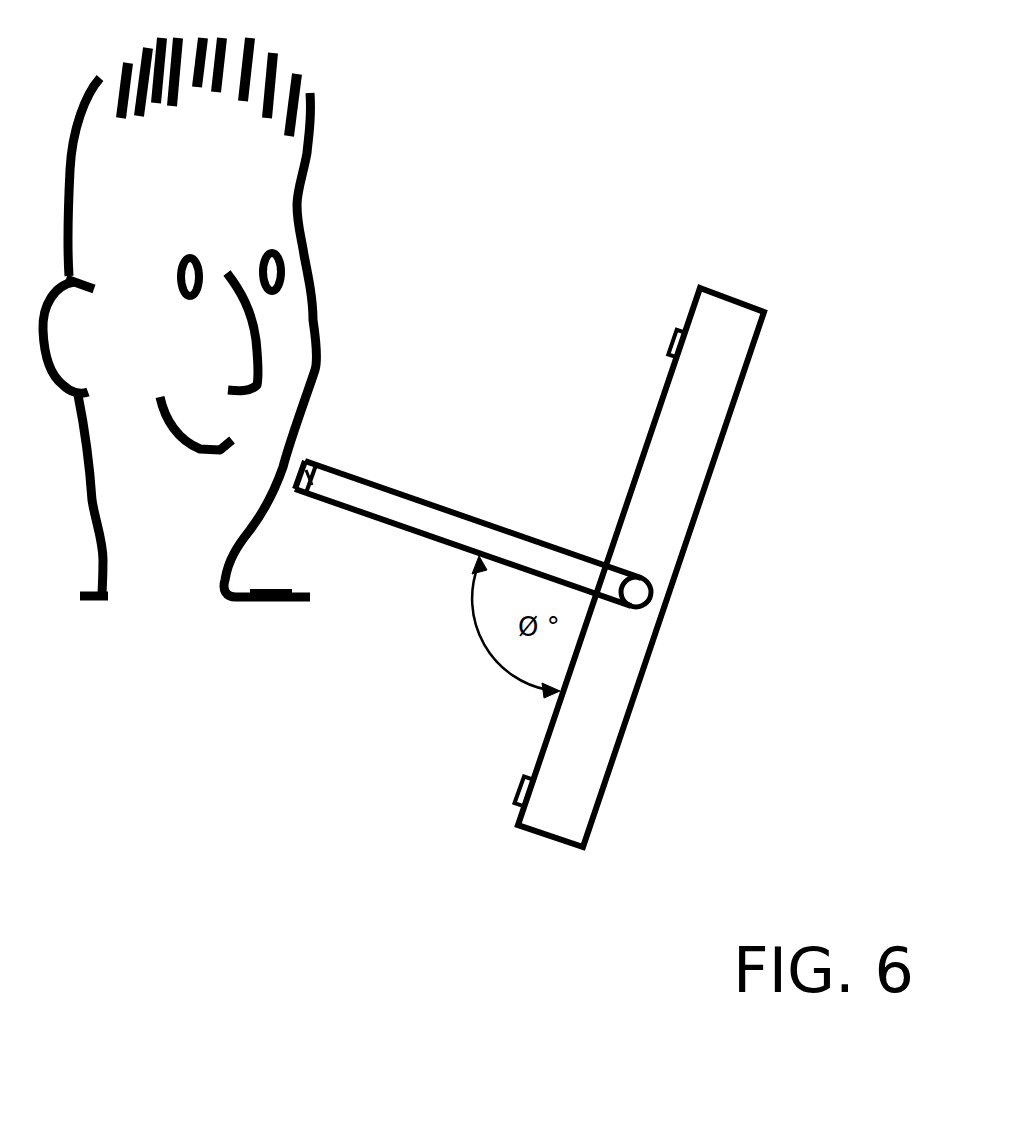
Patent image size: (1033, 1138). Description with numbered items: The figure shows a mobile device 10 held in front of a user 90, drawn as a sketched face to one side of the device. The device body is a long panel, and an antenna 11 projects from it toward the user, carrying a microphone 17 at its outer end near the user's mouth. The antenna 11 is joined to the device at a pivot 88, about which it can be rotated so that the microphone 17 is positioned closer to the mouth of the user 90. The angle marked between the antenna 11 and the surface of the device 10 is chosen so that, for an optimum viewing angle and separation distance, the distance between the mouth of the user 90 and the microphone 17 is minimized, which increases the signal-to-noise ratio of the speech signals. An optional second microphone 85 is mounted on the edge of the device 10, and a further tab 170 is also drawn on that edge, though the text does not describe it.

The user 90 is at (347, 97).
The mobile device 10 is at (675, 758).
The upper mounting tab 170 is at (672, 343).
The second microphone 85 is at (516, 793).
The antenna 11 is at (432, 502).
The microphone 17 is at (320, 466).
The pivot 88 is at (651, 604).